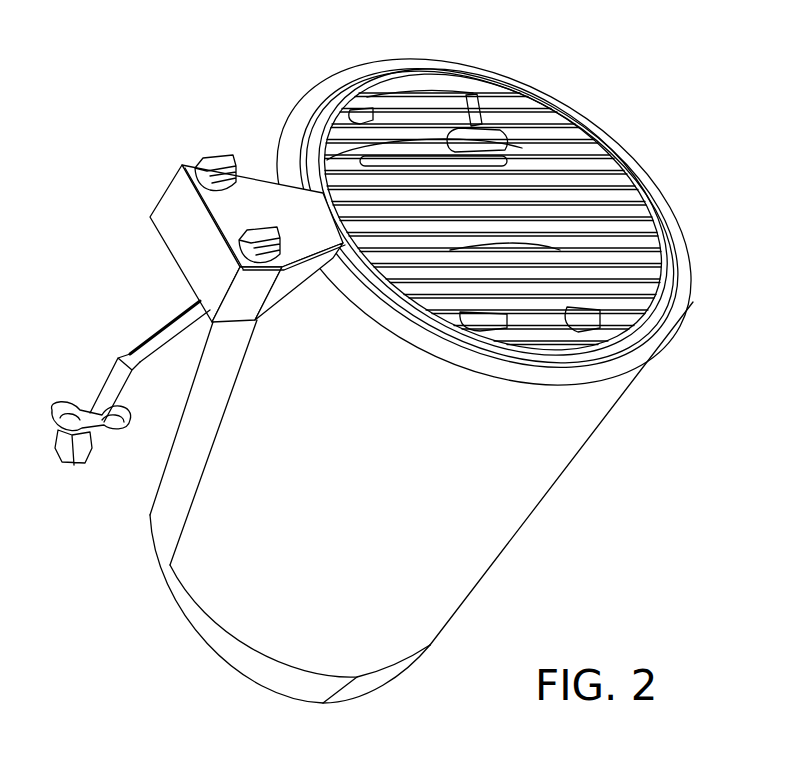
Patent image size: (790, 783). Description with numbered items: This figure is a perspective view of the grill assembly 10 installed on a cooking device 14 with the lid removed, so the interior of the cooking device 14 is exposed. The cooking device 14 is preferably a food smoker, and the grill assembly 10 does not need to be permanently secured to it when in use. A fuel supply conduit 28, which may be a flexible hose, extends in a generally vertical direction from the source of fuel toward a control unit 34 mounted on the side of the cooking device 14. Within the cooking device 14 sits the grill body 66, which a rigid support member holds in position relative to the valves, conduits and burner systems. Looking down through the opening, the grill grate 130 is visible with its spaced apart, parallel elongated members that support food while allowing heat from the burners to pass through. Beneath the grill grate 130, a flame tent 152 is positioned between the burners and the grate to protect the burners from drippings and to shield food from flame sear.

The grill assembly 10 is at (124, 70).
The cooking device 14 is at (587, 442).
The fuel supply conduit 28 is at (120, 357).
The control unit 34 is at (167, 192).
The grill body 66 is at (462, 127).
The grill grate 130 is at (613, 177).
The flame tent 152 is at (550, 180).